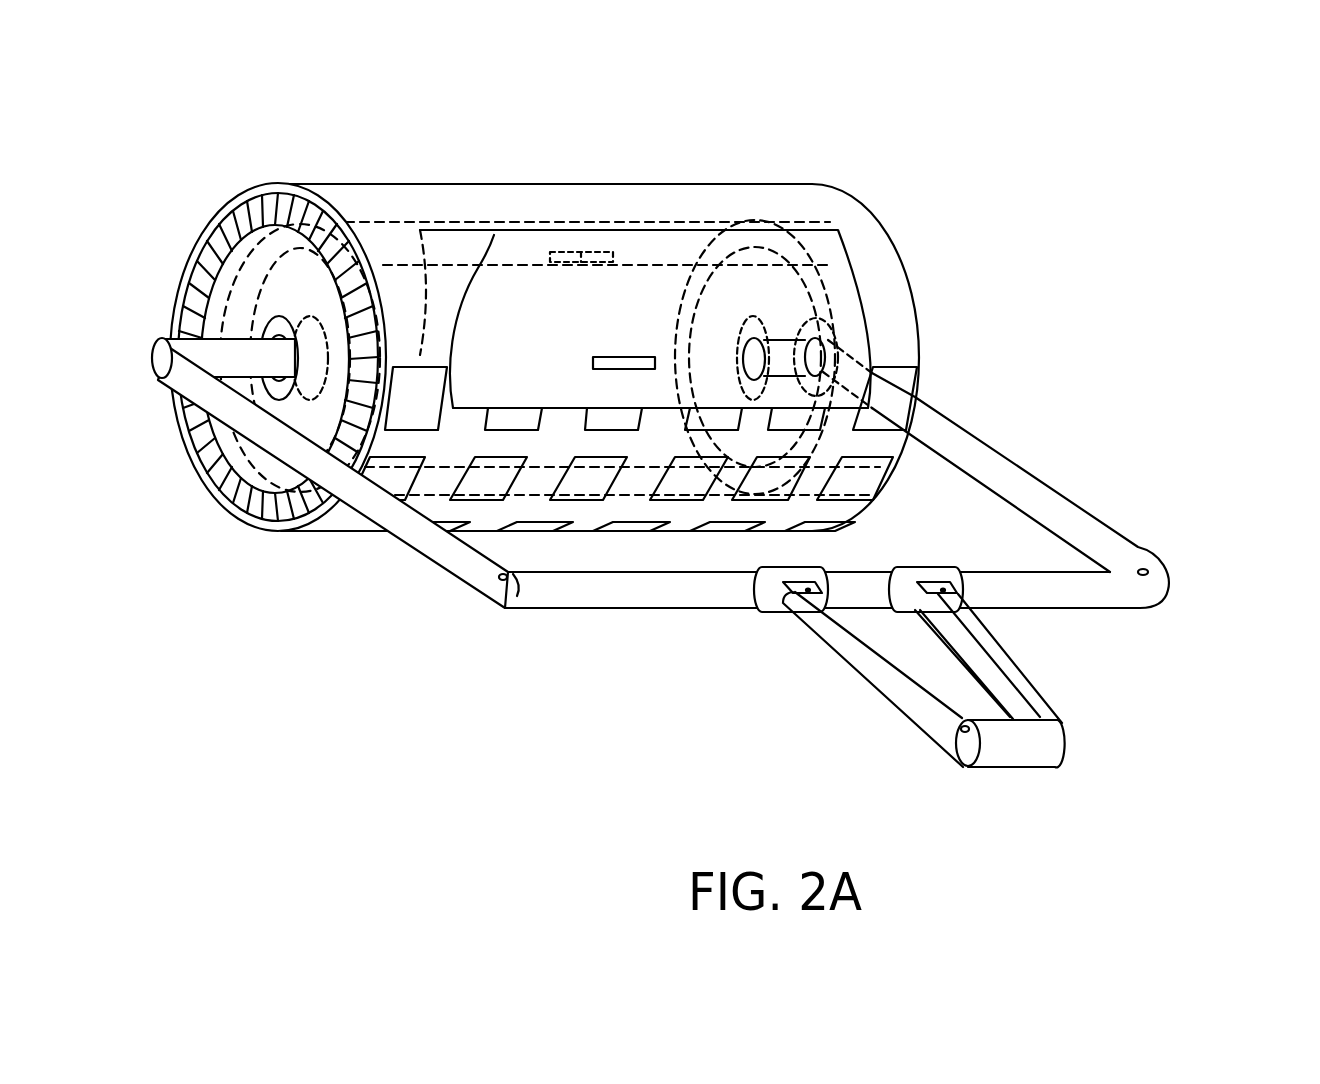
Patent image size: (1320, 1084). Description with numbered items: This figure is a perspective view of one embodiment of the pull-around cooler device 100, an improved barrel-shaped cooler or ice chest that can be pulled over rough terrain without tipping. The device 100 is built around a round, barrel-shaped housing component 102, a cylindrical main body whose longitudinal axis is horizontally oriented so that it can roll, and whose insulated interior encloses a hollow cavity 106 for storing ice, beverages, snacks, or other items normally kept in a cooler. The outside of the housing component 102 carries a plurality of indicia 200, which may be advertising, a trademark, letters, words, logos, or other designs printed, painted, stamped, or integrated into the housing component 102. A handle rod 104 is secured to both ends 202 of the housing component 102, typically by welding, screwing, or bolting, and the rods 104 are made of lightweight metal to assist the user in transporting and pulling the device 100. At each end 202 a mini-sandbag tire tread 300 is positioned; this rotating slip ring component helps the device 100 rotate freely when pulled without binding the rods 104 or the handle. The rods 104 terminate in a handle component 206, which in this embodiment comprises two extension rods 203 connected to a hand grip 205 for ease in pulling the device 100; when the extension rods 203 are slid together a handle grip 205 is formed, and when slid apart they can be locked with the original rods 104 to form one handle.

The pull-around cooler device 100 is at (945, 184).
The housing component 102 is at (812, 217).
The handle rod 104 is at (982, 455).
The hollow cavity 106 is at (420, 230).
The indicia 200 is at (494, 235).
The end of the housing component 202 is at (907, 280).
The extension rod 203 is at (850, 652).
The hand grip 205 is at (1032, 732).
The handle component 206 is at (1040, 588).
The mini-sandbag tire tread 300 is at (230, 243).